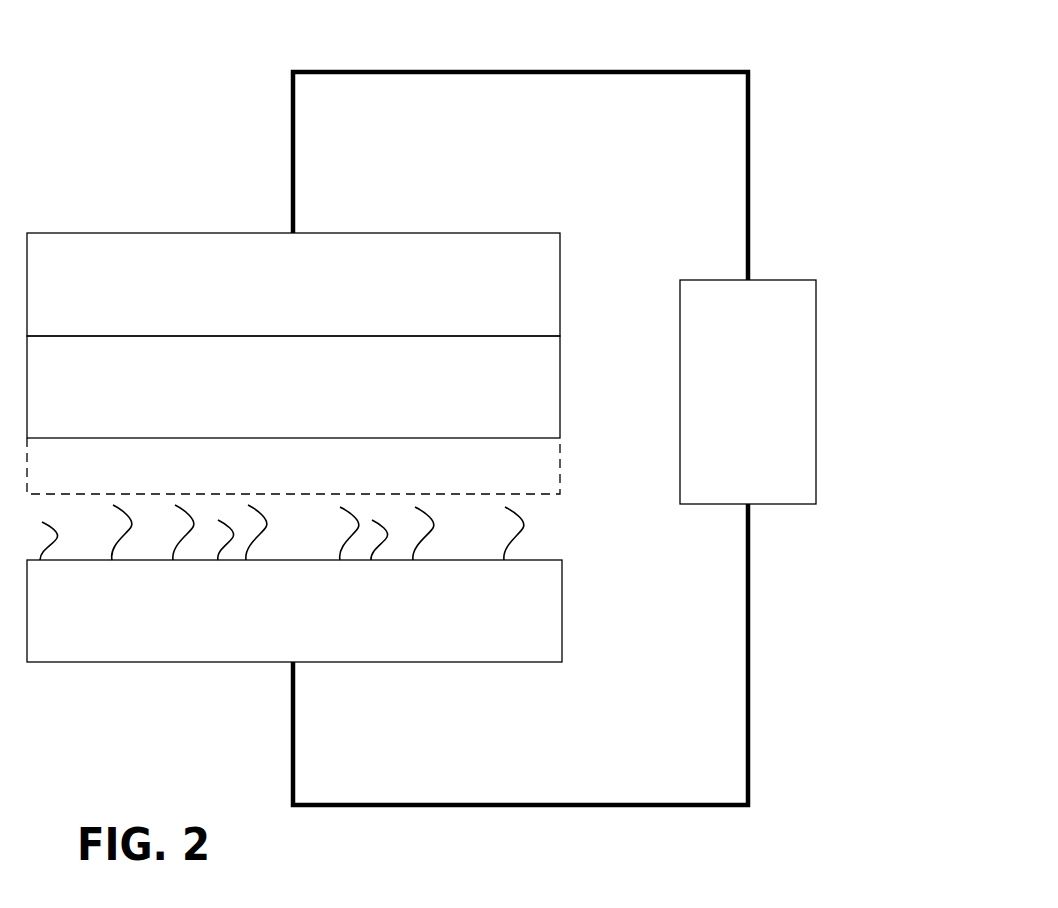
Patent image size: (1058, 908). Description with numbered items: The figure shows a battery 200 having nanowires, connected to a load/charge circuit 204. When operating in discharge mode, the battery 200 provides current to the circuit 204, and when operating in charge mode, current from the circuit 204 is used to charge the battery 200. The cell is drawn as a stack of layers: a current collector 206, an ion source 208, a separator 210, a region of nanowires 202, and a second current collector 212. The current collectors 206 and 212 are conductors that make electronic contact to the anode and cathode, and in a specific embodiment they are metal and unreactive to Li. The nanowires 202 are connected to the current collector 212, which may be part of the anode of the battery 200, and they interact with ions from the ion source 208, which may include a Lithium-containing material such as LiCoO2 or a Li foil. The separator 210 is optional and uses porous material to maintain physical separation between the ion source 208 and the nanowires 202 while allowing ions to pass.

The battery 200 is at (482, 185).
The nanowires 202 is at (532, 540).
The load/charge circuit 204 is at (770, 280).
The current collector 206 is at (555, 268).
The ion source 208 is at (555, 374).
The separator 210 is at (550, 479).
The current collector 212 is at (552, 598).